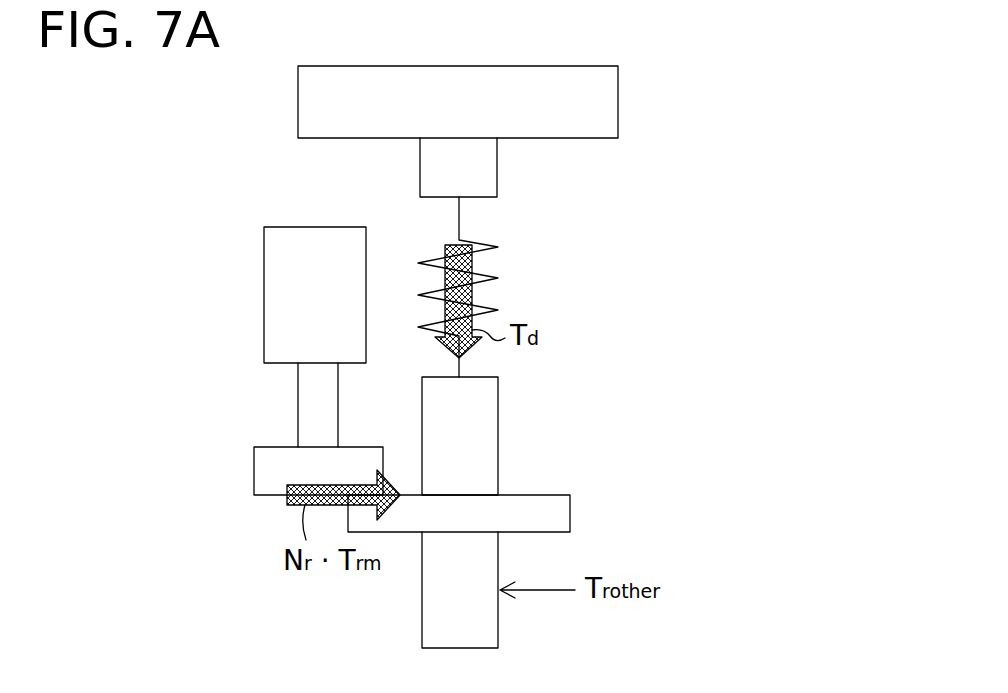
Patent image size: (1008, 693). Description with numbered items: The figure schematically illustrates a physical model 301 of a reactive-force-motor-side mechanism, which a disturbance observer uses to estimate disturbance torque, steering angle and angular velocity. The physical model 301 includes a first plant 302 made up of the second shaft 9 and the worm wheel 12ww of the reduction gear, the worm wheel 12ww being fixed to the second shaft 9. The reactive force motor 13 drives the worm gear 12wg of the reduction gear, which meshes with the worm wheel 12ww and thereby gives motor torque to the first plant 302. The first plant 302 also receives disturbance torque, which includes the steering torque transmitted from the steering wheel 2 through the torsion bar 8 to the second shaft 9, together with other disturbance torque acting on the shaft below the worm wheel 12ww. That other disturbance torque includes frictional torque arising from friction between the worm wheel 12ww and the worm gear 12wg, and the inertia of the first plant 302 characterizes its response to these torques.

The steering wheel 2 is at (620, 99).
The torsion bar 8 is at (498, 279).
The second shaft 9 is at (498, 405).
The reactive force motor 13 is at (264, 292).
The worm gear 12wg is at (254, 466).
The worm wheel 12ww is at (545, 495).
The first plant 302 is at (508, 454).
The physical model of a reactive-force-motor-side mechanism 301 is at (460, 612).